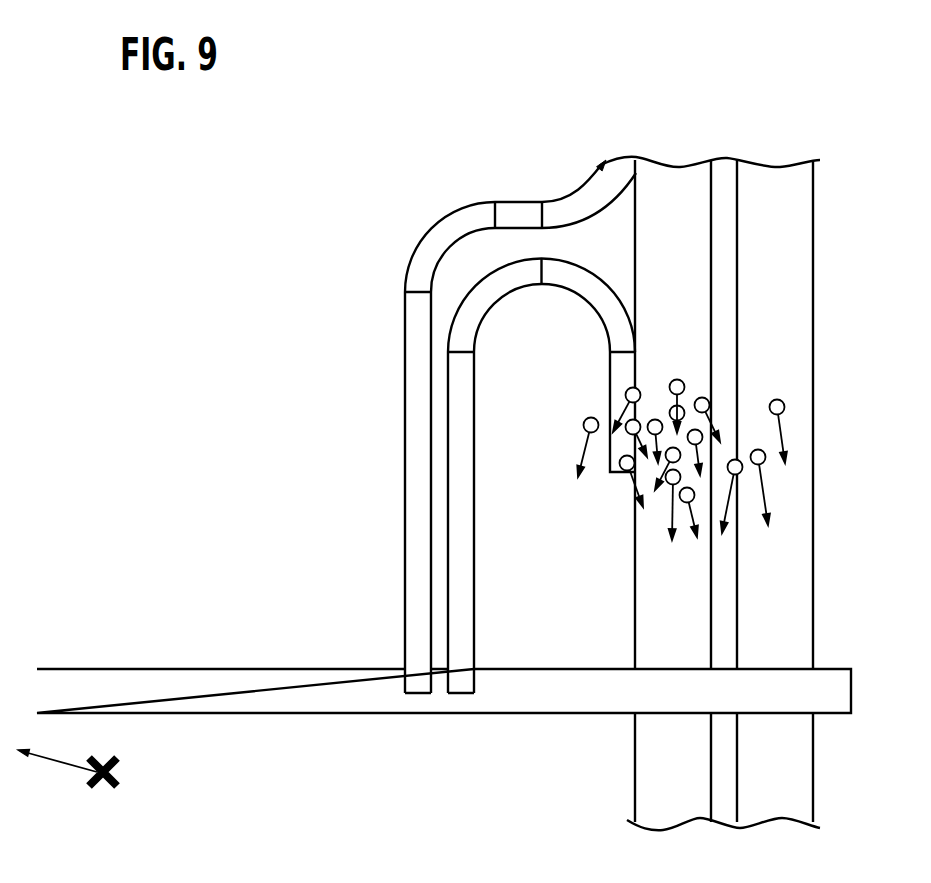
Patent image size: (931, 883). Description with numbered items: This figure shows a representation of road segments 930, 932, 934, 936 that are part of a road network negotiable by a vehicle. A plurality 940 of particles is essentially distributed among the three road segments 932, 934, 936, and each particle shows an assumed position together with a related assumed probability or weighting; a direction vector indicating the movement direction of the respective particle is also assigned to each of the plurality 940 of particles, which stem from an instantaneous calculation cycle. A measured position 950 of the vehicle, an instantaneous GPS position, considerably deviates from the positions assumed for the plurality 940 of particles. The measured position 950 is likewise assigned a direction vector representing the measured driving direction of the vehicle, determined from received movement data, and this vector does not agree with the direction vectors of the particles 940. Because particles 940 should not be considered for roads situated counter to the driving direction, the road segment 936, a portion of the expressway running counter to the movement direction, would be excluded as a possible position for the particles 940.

The road segment 930 is at (432, 248).
The road segment 932 is at (610, 372).
The road segment 934 is at (657, 240).
The road segment 936 is at (782, 600).
The plurality of particles 940 is at (799, 434).
The measured position 950 is at (105, 786).